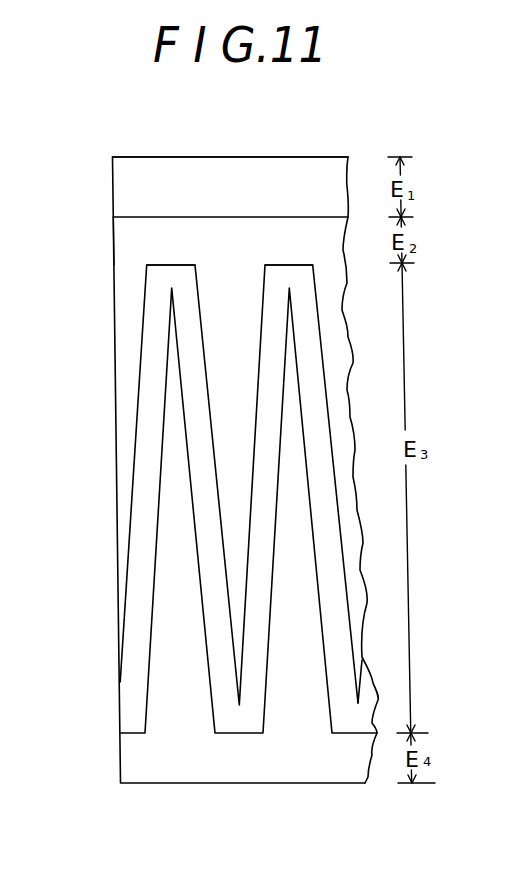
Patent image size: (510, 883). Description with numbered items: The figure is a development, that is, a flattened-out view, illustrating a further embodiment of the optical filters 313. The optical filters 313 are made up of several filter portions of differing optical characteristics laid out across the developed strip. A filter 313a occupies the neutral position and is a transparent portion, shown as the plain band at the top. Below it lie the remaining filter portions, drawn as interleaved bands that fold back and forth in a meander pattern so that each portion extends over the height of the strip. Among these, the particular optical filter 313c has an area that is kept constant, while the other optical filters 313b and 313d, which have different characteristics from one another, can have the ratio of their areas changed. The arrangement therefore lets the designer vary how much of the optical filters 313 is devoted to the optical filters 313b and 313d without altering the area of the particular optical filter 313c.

The optical filters 313 is at (207, 444).
The filter 313a is at (127, 191).
The optical filter 313b is at (128, 254).
The particular optical filter 313c is at (148, 364).
The optical filter 313d is at (168, 504).